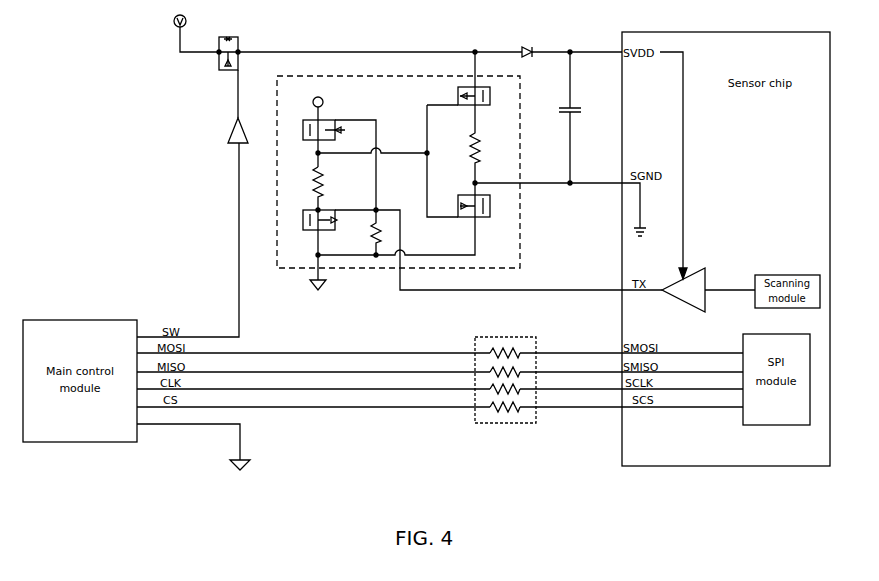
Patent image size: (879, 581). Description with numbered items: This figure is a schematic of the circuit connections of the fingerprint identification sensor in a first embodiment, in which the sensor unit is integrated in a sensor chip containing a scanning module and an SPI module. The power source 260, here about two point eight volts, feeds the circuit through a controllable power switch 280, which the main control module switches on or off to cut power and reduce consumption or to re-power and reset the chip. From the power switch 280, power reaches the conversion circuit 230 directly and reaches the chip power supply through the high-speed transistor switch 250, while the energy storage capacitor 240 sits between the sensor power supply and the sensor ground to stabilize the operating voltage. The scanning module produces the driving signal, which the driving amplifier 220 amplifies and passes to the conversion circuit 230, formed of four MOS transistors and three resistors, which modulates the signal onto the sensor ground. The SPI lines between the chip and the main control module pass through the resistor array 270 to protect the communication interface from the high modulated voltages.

The driving amplifier 220 is at (710, 268).
The conversion circuit 230 is at (378, 77).
The energy storage capacitor 240 is at (575, 105).
The high-speed transistor switch 250 is at (530, 50).
The power source 260 is at (173, 20).
The resistor array 270 is at (473, 416).
The power switch 280 is at (245, 43).